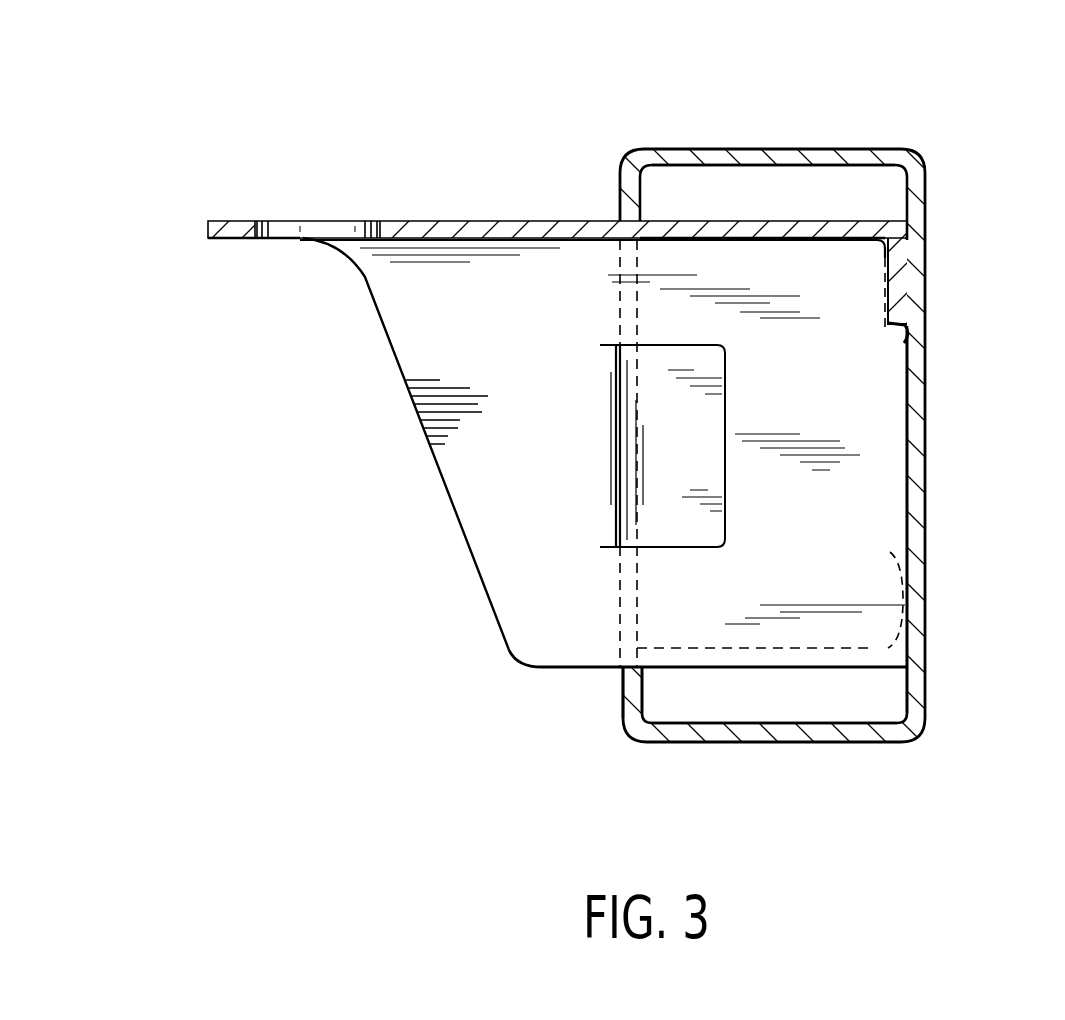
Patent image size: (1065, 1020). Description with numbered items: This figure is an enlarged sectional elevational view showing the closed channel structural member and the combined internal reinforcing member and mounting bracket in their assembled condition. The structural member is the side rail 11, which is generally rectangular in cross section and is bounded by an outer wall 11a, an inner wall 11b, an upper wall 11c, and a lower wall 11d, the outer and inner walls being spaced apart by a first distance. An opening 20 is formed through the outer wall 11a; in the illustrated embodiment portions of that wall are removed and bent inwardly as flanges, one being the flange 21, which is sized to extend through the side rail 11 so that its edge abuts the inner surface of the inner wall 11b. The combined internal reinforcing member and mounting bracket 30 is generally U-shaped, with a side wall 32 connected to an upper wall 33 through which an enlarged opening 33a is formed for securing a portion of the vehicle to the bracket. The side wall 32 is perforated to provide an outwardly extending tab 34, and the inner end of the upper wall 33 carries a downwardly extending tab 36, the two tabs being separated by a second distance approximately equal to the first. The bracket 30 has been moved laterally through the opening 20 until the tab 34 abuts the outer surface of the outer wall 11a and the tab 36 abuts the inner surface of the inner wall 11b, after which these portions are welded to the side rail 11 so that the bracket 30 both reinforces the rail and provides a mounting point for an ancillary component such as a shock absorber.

The side rail 11 is at (906, 160).
The outer wall 11a is at (623, 690).
The inner wall 11b is at (925, 385).
The upper wall 11c is at (742, 150).
The lower wall 11d is at (778, 730).
The opening 20 is at (598, 299).
The flange 21 is at (663, 475).
The combined internal reinforcing member and mounting bracket 30 is at (396, 434).
The side wall 32 is at (422, 345).
The upper wall 33 is at (490, 221).
The enlarged opening 33a is at (279, 221).
The tab 34 is at (600, 419).
The tab 36 is at (889, 270).